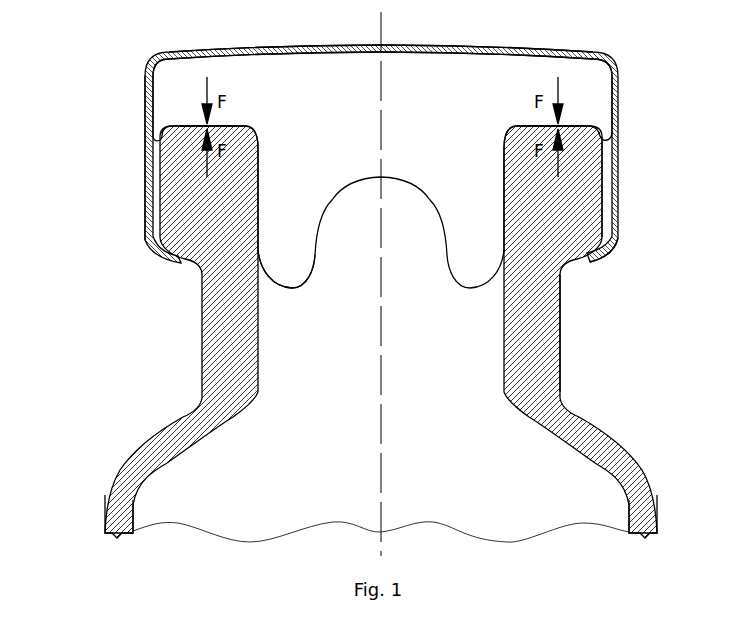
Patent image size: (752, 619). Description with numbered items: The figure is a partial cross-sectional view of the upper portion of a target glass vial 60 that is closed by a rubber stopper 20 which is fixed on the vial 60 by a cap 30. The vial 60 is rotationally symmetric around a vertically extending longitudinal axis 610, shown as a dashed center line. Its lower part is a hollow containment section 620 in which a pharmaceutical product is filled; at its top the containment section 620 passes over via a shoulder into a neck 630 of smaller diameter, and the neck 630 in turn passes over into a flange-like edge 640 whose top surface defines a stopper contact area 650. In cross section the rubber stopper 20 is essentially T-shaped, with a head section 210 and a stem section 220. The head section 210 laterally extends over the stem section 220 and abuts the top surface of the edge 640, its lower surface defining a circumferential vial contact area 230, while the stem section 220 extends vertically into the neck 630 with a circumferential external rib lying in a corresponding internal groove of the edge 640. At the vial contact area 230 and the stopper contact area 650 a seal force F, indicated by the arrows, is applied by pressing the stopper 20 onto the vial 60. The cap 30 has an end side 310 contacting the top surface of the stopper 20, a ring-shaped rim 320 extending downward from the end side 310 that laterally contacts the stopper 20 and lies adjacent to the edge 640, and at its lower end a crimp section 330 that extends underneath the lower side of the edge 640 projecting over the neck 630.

The rubber stopper 20 is at (383, 163).
The cap 30 is at (383, 163).
The target glass vial 60 is at (383, 284).
The head section 210 is at (335, 153).
The stem section 220 is at (303, 193).
The vial contact area 230 is at (200, 127).
The end side 310 is at (177, 55).
The ring-shaped rim 320 is at (147, 193).
The crimp section 330 is at (600, 247).
The longitudinal axis 610 is at (380, 458).
The containment section 620 is at (123, 513).
The neck 630 is at (540, 338).
The flange-like edge 640 is at (600, 200).
The stopper contact area 650 is at (575, 127).